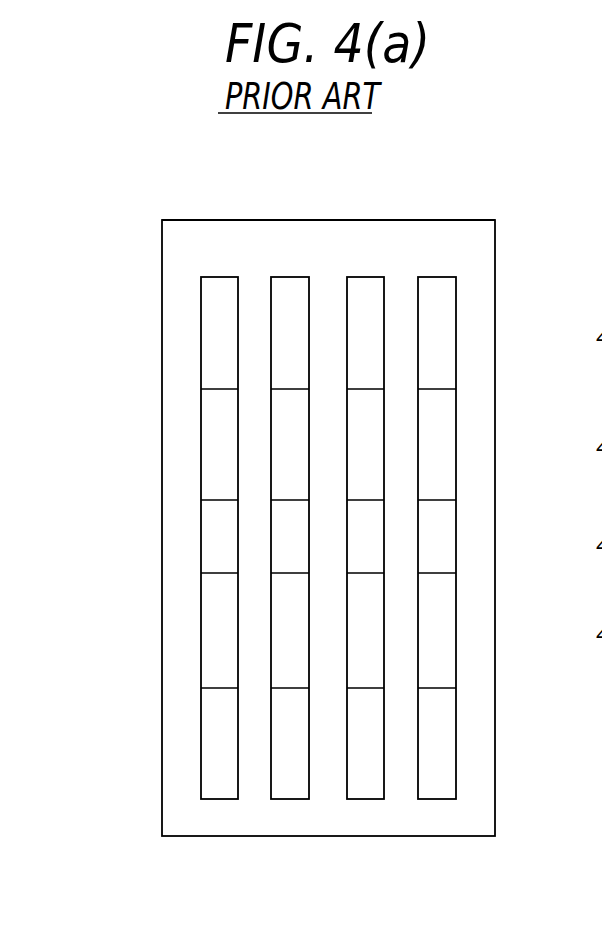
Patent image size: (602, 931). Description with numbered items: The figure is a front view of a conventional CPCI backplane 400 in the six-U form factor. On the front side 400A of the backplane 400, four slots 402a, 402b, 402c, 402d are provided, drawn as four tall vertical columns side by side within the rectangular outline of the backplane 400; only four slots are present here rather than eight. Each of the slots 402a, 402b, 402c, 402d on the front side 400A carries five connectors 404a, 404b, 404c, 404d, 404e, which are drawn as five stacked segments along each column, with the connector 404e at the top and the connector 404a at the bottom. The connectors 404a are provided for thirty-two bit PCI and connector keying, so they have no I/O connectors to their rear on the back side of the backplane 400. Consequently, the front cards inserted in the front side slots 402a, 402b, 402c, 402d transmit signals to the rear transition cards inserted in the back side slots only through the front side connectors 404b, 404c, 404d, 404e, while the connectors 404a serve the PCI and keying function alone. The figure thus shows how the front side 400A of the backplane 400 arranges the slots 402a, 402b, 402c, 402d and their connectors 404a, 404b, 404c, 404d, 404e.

The backplane 400 is at (232, 220).
The front side 400A is at (350, 220).
The slot 402a is at (219, 276).
The slot 402b is at (289, 276).
The slot 402c is at (367, 276).
The slot 402d is at (437, 276).
The connector 404a is at (204, 771).
The connector 404b is at (204, 656).
The connector 404c is at (281, 557).
The connector 404d is at (205, 471).
The connector 404e is at (205, 358).